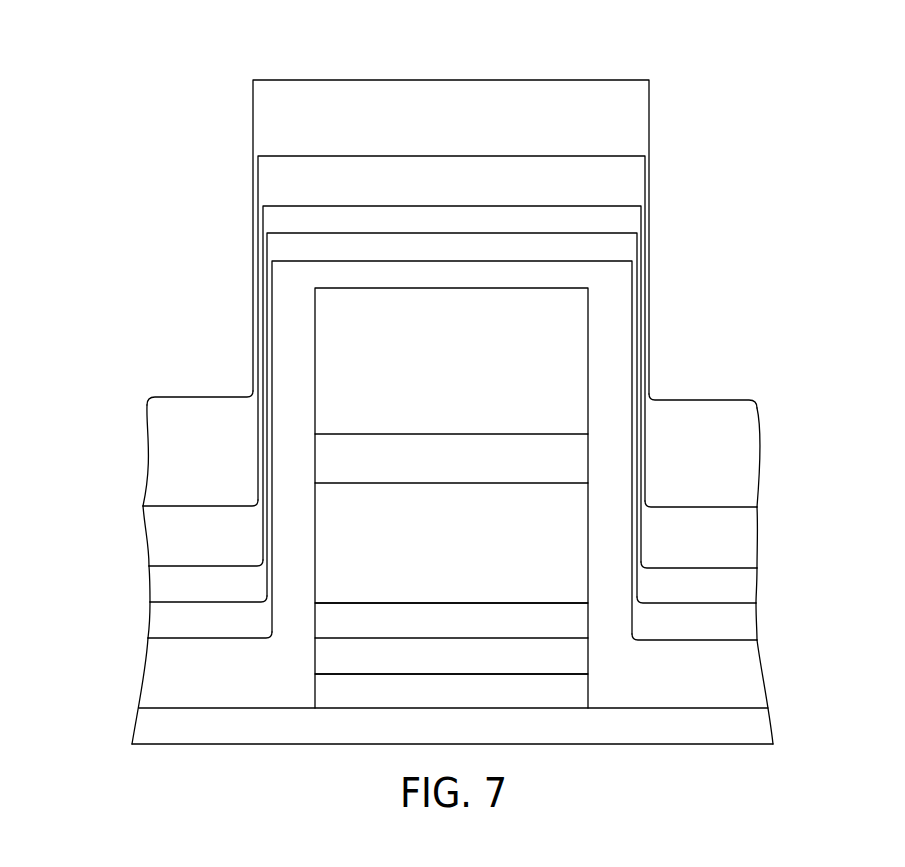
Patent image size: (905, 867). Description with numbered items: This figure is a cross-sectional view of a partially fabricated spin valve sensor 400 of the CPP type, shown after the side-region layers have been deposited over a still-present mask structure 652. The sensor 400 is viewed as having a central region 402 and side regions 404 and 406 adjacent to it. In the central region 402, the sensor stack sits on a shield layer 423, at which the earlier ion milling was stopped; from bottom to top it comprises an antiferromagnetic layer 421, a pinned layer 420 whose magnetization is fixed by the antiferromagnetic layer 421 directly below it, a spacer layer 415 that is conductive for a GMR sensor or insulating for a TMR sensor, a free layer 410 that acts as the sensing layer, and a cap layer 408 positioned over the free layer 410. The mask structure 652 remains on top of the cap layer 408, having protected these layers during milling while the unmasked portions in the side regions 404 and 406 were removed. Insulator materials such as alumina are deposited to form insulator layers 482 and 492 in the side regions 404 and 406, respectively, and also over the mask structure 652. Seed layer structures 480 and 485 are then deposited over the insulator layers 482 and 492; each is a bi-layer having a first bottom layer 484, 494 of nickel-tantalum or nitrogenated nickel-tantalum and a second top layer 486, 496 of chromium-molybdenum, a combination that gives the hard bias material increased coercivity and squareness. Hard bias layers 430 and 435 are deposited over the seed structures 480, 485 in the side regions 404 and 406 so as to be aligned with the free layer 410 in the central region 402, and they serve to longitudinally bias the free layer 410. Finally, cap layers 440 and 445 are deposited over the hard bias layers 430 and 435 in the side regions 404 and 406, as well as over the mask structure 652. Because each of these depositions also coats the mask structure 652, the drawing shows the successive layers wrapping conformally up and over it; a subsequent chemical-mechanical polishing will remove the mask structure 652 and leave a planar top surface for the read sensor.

The spin valve sensor 400 is at (452, 776).
The central region 402 is at (649, 67).
The side region 404 is at (253, 67).
The side region 406 is at (788, 67).
The cap layer 408 is at (540, 471).
The free layer 410 is at (535, 557).
The spacer layer 415 is at (568, 632).
The pinned layer 420 is at (568, 667).
The antiferromagnetic layer 421 is at (540, 702).
The shield layer 423 is at (452, 726).
The hard bias layer 430 is at (147, 533).
The hard bias layer 435 is at (745, 548).
The cap layer 440 is at (233, 436).
The cap layer 445 is at (717, 455).
The multi-layered seed layer structure 480 is at (152, 601).
The insulator layer 482 is at (152, 692).
The first layer 484 is at (152, 624).
The multi-layered seed layer structure 485 is at (747, 605).
The second layer 486 is at (155, 568).
The insulator layer 492 is at (750, 688).
The first layer 494 is at (747, 636).
The second layer 496 is at (747, 577).
The mask structure 652 is at (475, 399).